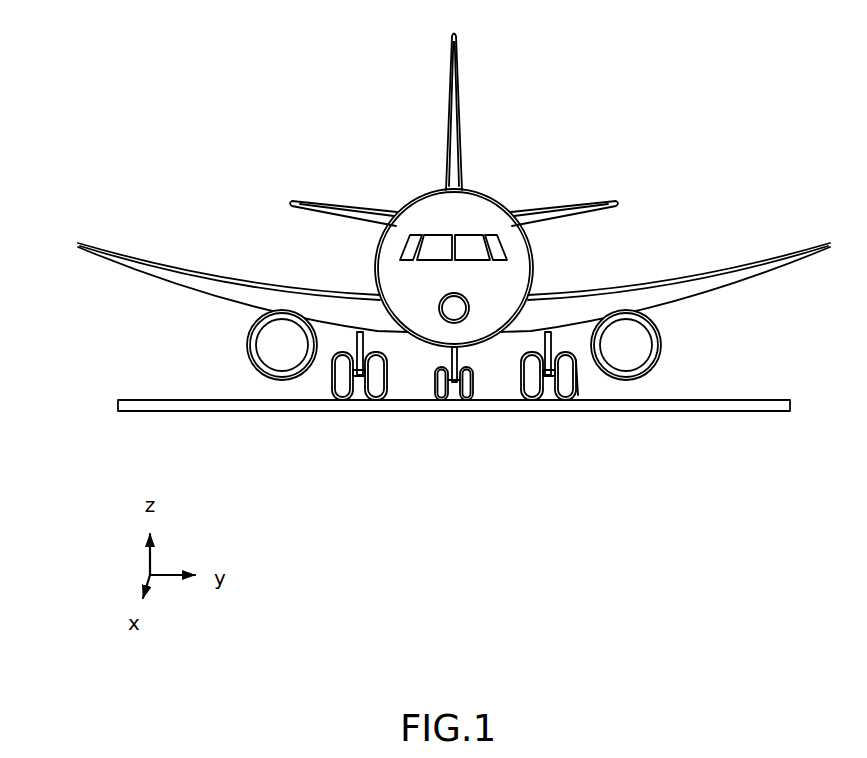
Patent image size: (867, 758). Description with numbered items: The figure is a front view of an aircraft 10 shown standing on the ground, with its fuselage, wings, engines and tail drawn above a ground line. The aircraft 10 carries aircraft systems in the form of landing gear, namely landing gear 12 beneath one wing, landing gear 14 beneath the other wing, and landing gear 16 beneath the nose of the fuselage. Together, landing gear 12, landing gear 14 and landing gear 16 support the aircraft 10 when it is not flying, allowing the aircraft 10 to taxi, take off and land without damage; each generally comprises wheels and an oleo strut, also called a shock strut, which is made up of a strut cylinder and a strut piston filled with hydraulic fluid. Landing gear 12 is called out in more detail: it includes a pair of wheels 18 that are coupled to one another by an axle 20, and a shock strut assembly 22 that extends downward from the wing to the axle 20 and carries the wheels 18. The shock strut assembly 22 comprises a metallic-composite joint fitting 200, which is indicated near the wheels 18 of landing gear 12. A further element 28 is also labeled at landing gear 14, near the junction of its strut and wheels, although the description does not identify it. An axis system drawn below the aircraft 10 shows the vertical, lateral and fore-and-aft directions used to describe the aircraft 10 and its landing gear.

The aircraft 10 is at (454, 271).
The landing gear 12 is at (577, 356).
The landing gear 14 is at (294, 327).
The landing gear 16 is at (425, 392).
The wheels 18 is at (530, 383).
The axle 20 is at (551, 380).
The shock strut assembly 22 is at (548, 338).
The brake assembly 28 is at (353, 362).
The metallic-composite joint fitting 200 is at (592, 381).